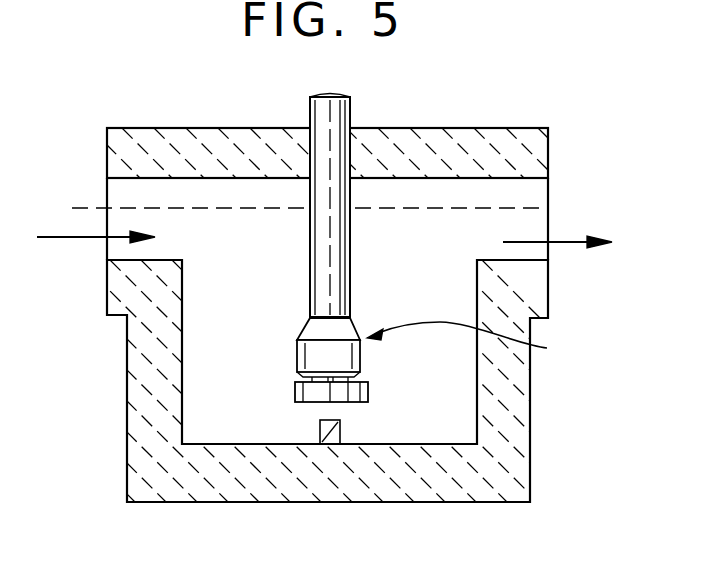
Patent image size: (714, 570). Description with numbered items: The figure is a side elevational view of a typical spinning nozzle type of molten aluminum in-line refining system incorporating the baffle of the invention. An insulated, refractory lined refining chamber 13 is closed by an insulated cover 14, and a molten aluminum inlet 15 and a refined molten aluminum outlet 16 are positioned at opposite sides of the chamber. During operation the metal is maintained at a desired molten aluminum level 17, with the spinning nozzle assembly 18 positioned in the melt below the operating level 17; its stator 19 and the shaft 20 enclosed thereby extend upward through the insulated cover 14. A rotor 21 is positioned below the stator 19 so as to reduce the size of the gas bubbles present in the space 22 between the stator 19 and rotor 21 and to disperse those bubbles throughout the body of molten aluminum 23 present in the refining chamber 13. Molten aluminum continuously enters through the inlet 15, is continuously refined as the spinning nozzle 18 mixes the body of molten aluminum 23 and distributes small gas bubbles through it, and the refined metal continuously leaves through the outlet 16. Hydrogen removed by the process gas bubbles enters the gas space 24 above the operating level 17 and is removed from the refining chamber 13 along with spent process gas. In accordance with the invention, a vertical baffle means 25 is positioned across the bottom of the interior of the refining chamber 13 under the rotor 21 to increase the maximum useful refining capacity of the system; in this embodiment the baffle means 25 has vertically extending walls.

The refining chamber 13 is at (528, 446).
The insulated cover 14 is at (485, 129).
The molten aluminum inlet 15 is at (55, 237).
The refined molten aluminum outlet 16 is at (560, 243).
The molten aluminum level 17 is at (145, 202).
The spinning nozzle assembly 18 is at (473, 347).
The stator 19 is at (350, 253).
The shaft 20 is at (357, 367).
The rotor 21 is at (300, 403).
The space 22 is at (298, 374).
The body of molten aluminum 23 is at (262, 299).
The gas space 24 is at (220, 193).
The baffle means 25 is at (340, 433).